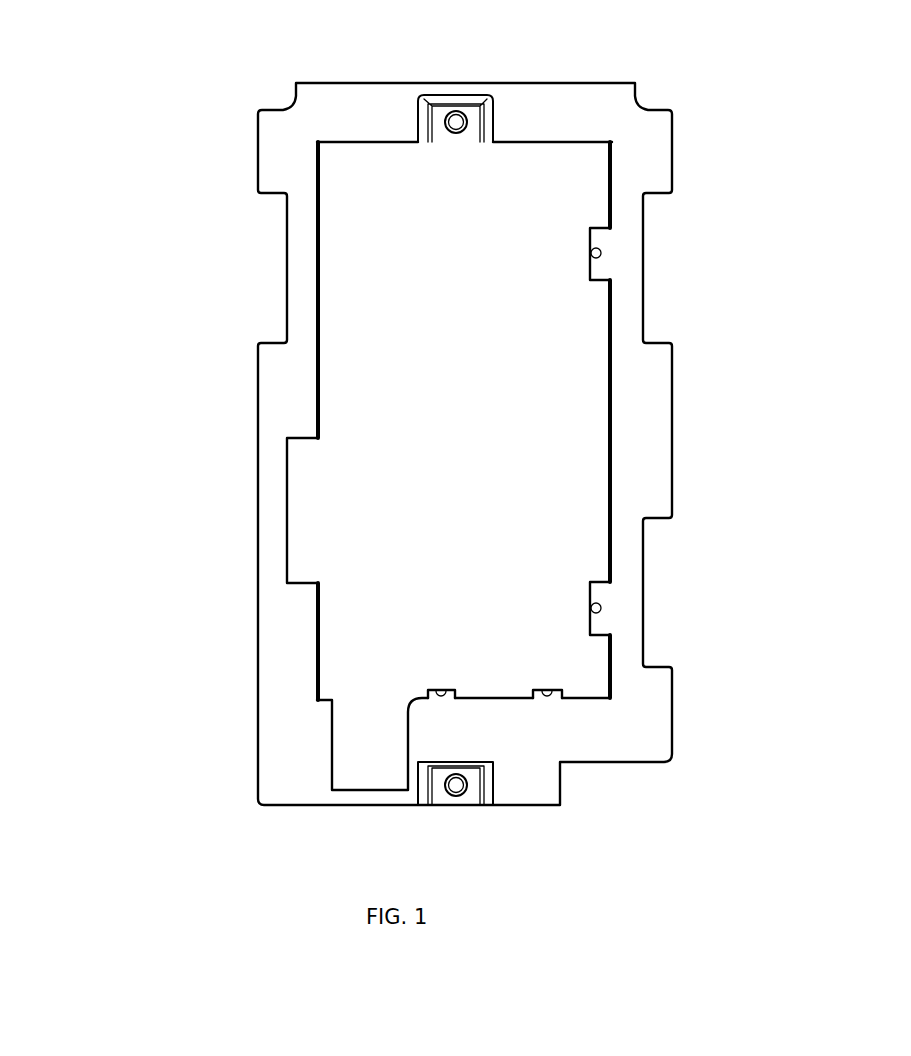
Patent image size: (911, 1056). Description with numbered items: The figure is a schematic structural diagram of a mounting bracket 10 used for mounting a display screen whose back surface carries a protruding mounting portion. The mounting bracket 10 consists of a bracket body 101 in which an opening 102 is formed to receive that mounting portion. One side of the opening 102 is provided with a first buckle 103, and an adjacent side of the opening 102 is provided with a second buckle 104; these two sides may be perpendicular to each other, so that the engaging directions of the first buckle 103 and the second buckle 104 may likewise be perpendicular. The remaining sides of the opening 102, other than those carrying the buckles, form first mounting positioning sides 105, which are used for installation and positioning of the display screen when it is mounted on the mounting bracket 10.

The mounting bracket 10 is at (157, 120).
The bracket body 101 is at (297, 150).
The opening 102 is at (362, 318).
The first buckle 103 is at (548, 698).
The second buckle 104 is at (600, 585).
The first mounting positioning side 105 is at (402, 142).